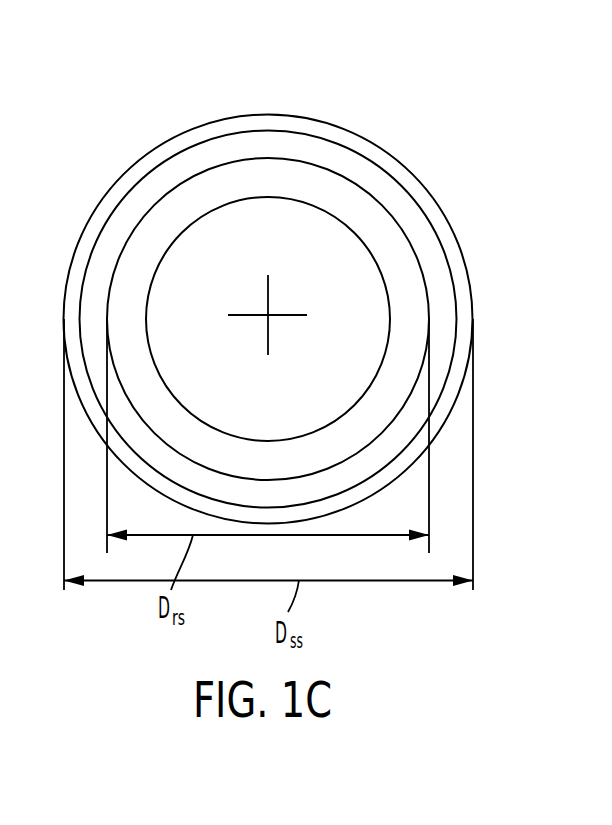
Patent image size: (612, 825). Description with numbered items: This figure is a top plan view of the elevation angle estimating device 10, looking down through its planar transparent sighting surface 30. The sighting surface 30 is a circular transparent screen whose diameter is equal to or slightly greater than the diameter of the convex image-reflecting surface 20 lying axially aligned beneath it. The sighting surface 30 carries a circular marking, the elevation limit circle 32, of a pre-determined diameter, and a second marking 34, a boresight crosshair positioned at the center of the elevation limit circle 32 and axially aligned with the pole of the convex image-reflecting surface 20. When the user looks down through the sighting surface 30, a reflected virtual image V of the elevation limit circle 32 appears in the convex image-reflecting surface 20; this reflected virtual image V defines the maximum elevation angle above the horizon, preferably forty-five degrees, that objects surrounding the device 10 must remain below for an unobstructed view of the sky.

The elevation angle estimating device 10 is at (118, 70).
The convex image-reflecting surface 20 is at (119, 257).
The planar transparent sighting surface 30 is at (438, 200).
The elevation limit circle 32 is at (454, 282).
The second marking 34 is at (249, 314).
The reflected virtual image V is at (258, 197).